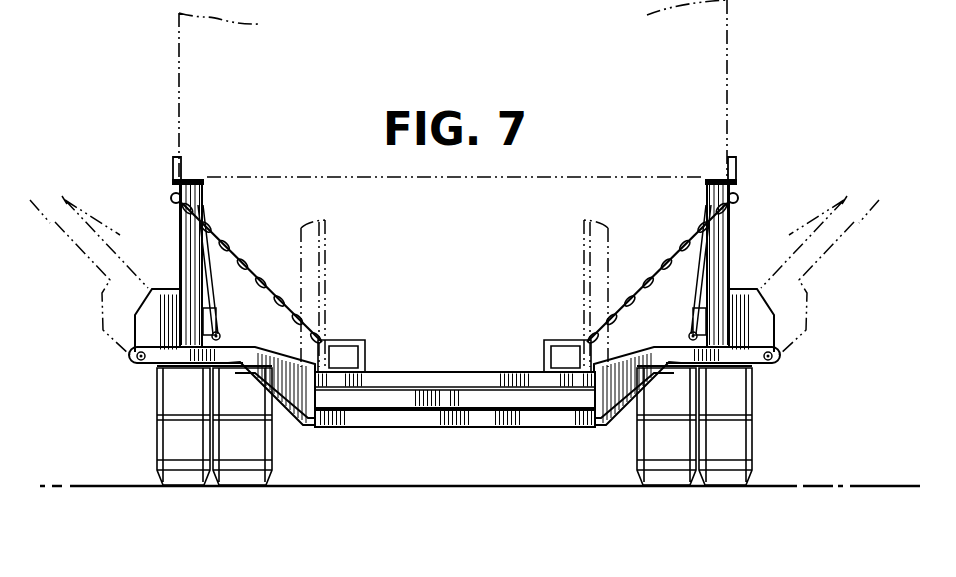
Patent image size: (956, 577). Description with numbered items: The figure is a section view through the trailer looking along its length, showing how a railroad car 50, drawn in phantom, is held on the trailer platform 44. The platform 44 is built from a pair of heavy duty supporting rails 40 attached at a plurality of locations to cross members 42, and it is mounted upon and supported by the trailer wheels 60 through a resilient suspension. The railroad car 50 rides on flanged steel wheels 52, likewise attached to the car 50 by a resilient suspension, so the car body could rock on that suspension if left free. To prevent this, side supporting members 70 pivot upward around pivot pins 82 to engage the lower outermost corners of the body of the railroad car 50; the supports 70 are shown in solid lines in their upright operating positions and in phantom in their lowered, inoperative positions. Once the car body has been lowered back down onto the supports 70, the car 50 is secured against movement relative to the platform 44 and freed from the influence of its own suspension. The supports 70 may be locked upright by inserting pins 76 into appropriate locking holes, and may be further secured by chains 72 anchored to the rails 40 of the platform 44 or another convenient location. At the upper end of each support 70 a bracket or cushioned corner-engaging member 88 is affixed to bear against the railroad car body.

The supporting rail 40 is at (366, 356).
The cross member 42 is at (418, 418).
The platform 44 is at (463, 372).
The railroad car 50 is at (451, 178).
The steel wheels 52 is at (325, 278).
The trailer wheels 60 is at (248, 486).
The pivotable support member 70 is at (180, 250).
The chain 72 is at (250, 276).
The pin 76 is at (215, 331).
The pivot pin 82 is at (140, 360).
The corner-engaging member 88 is at (173, 166).